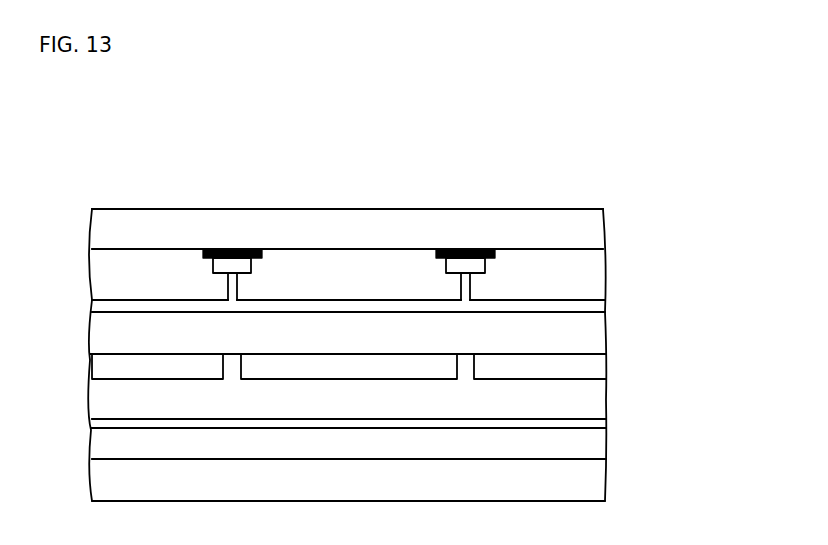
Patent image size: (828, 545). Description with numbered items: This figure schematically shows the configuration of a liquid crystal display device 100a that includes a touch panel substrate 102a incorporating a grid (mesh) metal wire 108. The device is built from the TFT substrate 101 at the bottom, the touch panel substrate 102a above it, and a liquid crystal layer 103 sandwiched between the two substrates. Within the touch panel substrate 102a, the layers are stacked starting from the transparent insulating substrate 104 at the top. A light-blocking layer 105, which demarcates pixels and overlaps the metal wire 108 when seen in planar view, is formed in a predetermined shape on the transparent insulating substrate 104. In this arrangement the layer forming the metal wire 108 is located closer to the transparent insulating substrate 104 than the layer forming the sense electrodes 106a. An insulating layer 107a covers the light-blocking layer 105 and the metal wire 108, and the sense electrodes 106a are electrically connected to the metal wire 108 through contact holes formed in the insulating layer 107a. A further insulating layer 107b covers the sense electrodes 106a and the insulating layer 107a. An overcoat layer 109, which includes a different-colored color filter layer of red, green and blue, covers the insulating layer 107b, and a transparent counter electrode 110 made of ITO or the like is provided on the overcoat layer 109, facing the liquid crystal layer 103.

The liquid crystal display device 100a is at (583, 168).
The TFT substrate 101 is at (597, 473).
The touch panel substrate 102a is at (670, 208).
The liquid crystal layer 103 is at (597, 441).
The transparent insulating substrate 104 is at (597, 225).
The light-blocking layer 105 is at (233, 250).
The sense electrodes 106a is at (597, 304).
The insulating layer 107a is at (597, 270).
The insulating layer 107b is at (597, 332).
The metal wire 108 is at (247, 265).
The overcoat layer 109 is at (597, 394).
The transparent counter electrode 110 is at (597, 419).